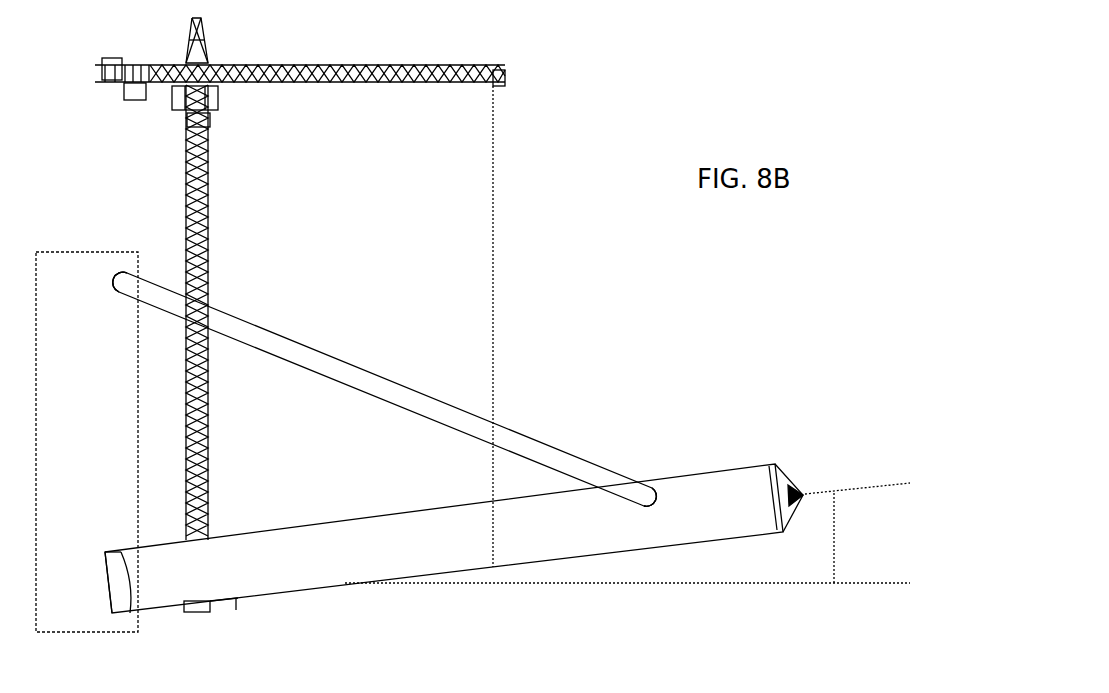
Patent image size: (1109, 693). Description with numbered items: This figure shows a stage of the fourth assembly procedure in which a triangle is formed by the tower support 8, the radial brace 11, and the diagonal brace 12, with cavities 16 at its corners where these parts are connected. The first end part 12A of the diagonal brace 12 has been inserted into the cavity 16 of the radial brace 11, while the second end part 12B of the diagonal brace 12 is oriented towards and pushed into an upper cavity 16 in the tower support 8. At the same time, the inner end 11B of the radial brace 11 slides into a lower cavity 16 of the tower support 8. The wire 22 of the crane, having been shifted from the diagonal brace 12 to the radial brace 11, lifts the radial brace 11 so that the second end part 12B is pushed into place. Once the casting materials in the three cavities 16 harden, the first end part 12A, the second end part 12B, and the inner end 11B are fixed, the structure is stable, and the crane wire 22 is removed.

The tower support 8 is at (84, 413).
The radial brace 11 is at (744, 515).
The inner end of the radial brace 11B is at (121, 548).
The diagonal brace 12 is at (430, 397).
The first end part of the diagonal brace 12A is at (638, 470).
The second end part of the diagonal brace 12B is at (118, 322).
The cavity 16 is at (100, 265).
The wire of the crane 22 is at (493, 255).